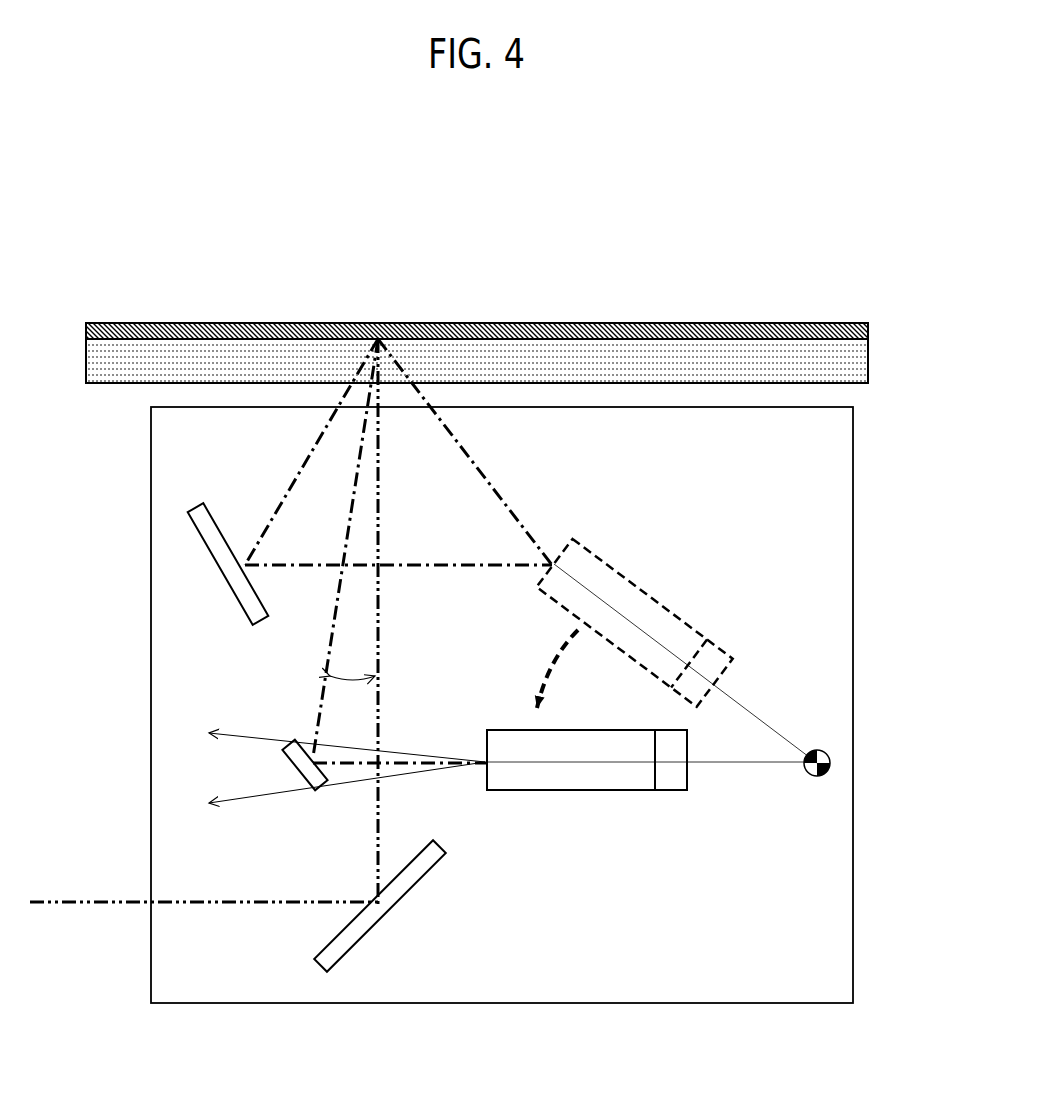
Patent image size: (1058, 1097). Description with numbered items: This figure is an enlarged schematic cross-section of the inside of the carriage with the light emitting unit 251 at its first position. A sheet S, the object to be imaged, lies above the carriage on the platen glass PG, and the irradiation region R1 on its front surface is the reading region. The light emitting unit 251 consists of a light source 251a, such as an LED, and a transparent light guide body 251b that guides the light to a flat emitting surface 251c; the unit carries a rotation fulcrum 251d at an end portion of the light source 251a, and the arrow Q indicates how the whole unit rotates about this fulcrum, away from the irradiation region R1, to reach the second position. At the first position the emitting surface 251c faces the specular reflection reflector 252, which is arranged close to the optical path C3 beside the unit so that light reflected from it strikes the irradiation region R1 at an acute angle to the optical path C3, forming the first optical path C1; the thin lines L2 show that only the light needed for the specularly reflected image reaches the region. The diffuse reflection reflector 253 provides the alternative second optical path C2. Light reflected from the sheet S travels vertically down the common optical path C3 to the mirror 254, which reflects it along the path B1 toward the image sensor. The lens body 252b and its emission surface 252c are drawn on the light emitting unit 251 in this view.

The sheet S is at (850, 330).
The platen glass PG is at (842, 367).
The irradiation region R1 is at (378, 337).
The first optical path C1 is at (339, 548).
The second optical path C2 is at (311, 452).
The optical path C3 is at (400, 622).
The reflected light path B1 is at (204, 881).
The thin line L2 is at (329, 764).
The arrow Q is at (549, 669).
The light emitting unit 251 is at (580, 798).
The light source 251a is at (668, 775).
The light guide body 251b is at (655, 608).
The emitting surface 251c is at (553, 552).
The rotation fulcrum 251d is at (826, 752).
The specular reflection reflector 252 is at (303, 766).
The lens body 252b is at (607, 770).
The lens emission surface 252c is at (486, 744).
The diffuse reflection reflector 253 is at (242, 573).
The mirror 254 is at (387, 907).